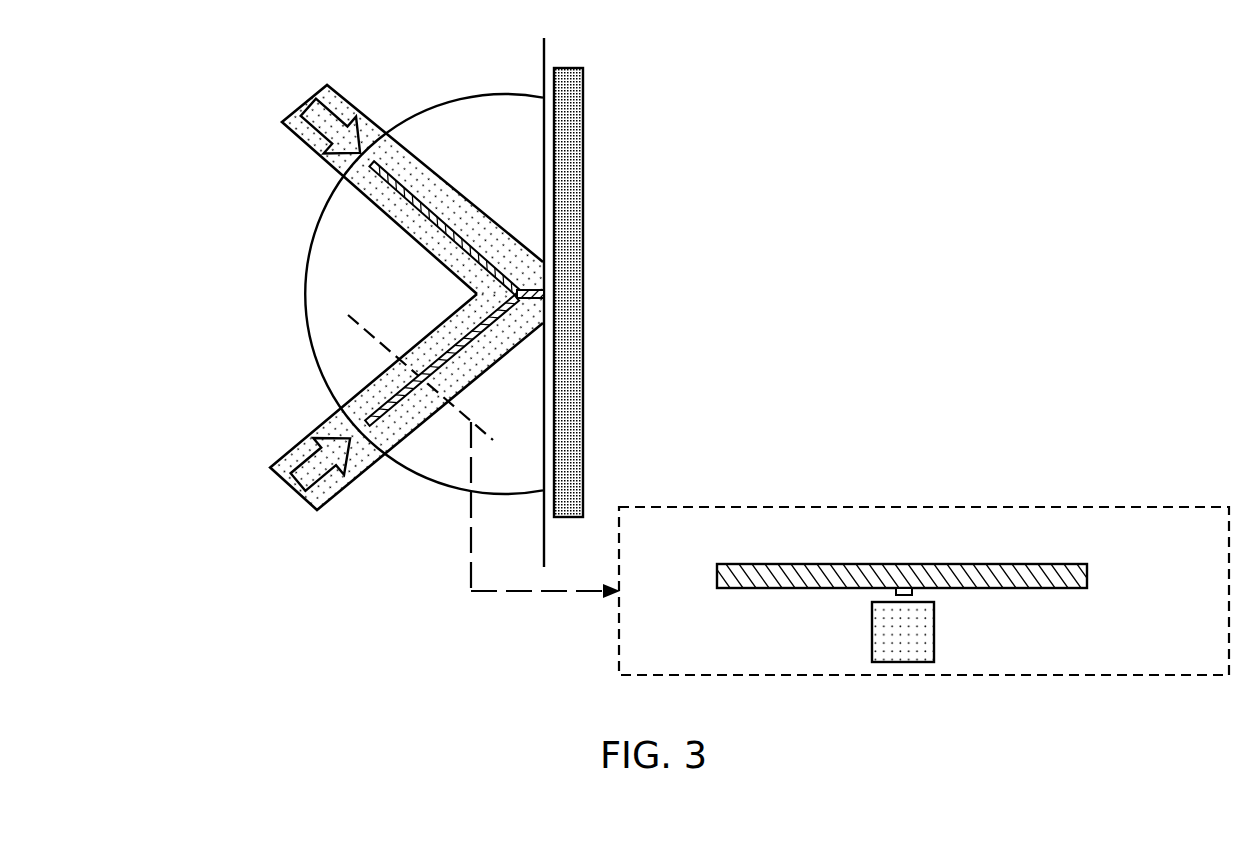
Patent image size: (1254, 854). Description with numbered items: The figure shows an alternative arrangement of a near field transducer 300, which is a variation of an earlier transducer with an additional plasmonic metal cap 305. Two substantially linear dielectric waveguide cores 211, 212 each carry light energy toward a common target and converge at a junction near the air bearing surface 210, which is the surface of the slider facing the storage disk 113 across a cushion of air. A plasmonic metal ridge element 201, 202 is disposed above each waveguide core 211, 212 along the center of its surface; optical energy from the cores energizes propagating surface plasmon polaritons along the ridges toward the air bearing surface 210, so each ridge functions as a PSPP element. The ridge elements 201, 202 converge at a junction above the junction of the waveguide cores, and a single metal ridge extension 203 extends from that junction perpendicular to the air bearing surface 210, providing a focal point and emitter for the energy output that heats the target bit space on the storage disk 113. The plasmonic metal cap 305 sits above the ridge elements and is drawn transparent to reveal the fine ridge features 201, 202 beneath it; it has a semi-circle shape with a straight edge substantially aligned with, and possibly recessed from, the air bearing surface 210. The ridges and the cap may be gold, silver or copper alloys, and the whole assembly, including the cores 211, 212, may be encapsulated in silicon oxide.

The near field transducer 300 is at (153, 56).
The air bearing surface 210 is at (546, 50).
The storage disk 113 is at (585, 292).
The plasmonic metal cap 305 is at (306, 297).
The dielectric waveguide core 211 is at (300, 103).
The dielectric waveguide core 212 is at (292, 447).
The plasmonic metal ridge element 201 is at (350, 181).
The plasmonic metal ridge element 202 is at (394, 416).
The metal ridge extension 203 is at (521, 289).